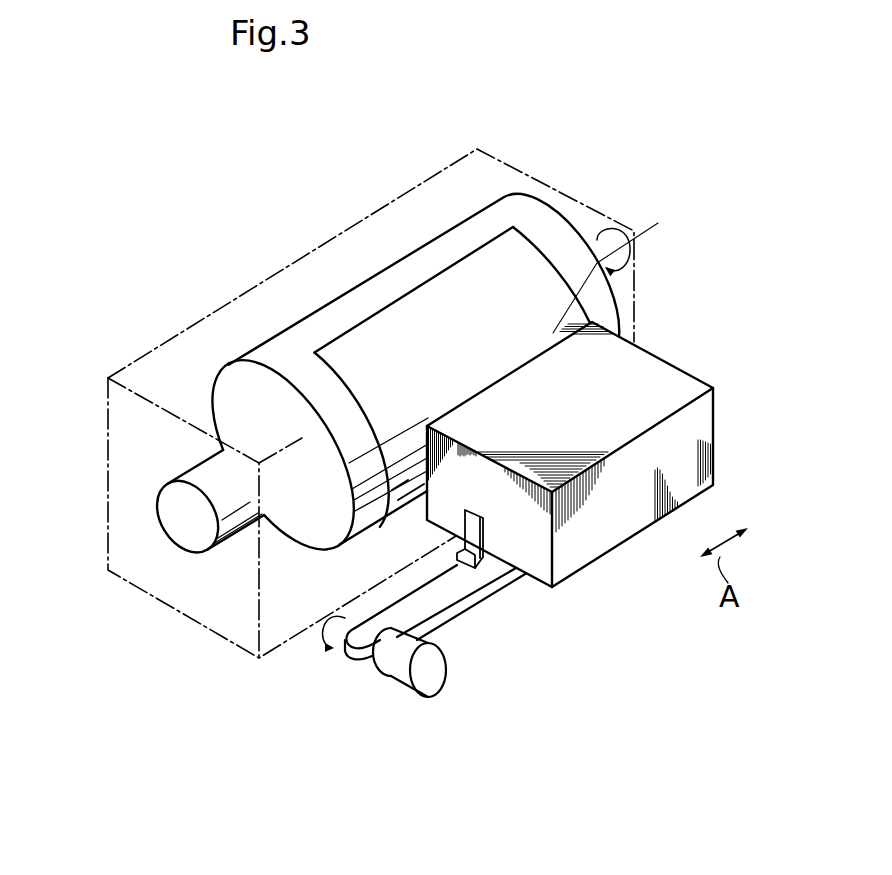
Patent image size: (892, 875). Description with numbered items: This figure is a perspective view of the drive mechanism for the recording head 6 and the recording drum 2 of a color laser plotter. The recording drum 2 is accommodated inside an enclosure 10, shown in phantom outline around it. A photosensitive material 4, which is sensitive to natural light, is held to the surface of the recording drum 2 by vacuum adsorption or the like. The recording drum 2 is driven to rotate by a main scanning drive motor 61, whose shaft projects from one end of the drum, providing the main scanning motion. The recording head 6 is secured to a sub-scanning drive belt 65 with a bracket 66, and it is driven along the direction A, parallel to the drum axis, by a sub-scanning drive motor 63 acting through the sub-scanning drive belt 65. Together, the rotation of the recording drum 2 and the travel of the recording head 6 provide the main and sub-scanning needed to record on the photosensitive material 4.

The recording drum 2 is at (505, 212).
The photosensitive material 4 is at (418, 313).
The recording head 6 is at (648, 372).
The enclosure 10 is at (118, 427).
The main scanning drive motor 61 is at (178, 527).
The sub-scanning drive motor 63 is at (433, 683).
The sub-scanning drive belt 65 is at (470, 608).
The bracket 66 is at (473, 533).